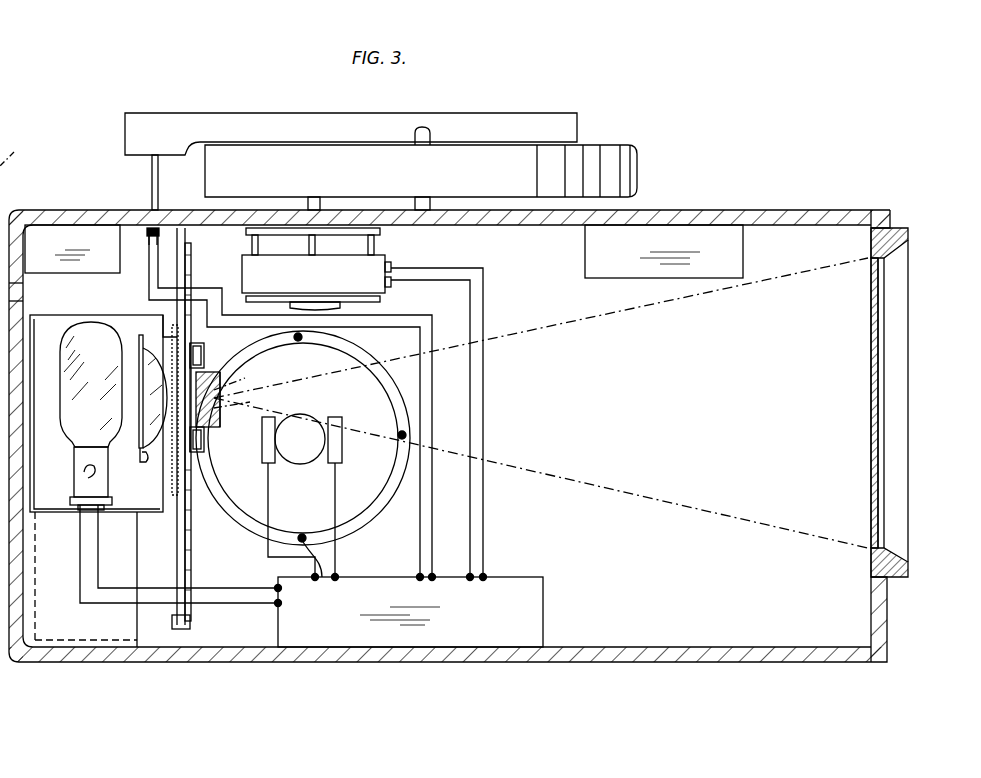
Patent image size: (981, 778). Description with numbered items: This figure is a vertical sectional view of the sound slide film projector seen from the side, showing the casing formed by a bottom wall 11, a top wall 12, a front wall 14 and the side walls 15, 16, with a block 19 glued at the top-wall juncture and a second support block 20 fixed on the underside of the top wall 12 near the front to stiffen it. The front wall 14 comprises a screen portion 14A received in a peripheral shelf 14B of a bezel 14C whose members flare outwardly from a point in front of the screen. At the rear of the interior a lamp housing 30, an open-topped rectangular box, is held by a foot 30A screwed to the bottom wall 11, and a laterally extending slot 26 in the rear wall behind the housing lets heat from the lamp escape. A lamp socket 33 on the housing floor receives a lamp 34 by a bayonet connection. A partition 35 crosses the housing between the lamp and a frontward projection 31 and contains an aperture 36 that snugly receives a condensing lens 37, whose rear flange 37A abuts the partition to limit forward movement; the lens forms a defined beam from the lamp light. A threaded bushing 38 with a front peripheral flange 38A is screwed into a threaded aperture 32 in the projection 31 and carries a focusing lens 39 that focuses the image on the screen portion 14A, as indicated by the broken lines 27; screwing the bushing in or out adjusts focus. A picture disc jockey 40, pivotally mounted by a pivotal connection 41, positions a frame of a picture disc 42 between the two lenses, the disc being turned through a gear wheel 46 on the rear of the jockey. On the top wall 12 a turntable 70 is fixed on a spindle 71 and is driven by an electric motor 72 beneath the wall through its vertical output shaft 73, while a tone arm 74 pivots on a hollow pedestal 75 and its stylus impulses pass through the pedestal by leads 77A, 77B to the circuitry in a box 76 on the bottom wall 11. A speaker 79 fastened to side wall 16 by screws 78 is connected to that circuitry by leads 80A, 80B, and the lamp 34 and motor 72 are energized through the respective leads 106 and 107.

The bottom wall 11 is at (248, 640).
The top wall 12 is at (695, 212).
The front wall 14 is at (896, 308).
The screen portion 14A is at (872, 374).
The peripheral shelf 14B is at (870, 260).
The bezel 14C is at (905, 232).
The side wall 15 is at (24, 150).
The side wall 16 is at (544, 278).
The block 19 is at (80, 240).
The second support block 20 is at (728, 240).
The slot 26 is at (24, 290).
The broken lines 27 is at (627, 312).
The lamp housing 30 is at (52, 494).
The foot 30A is at (62, 630).
The projection 31 is at (205, 358).
The threaded aperture 32 is at (206, 447).
The lamp socket 33 is at (106, 490).
The lamp 34 is at (90, 326).
The partition 35 is at (140, 336).
The aperture 36 is at (140, 452).
The condensing lens 37 is at (152, 388).
The flange 37A is at (124, 352).
The threaded bushing 38 is at (222, 380).
The peripheral flange 38A is at (216, 440).
The focusing lens 39 is at (240, 403).
The picture disc jockey 40 is at (182, 542).
The pivotal connection 41 is at (192, 623).
The picture disc 42 is at (190, 568).
The gear wheel 46 is at (178, 505).
The turntable 70 is at (598, 152).
The spindle 71 is at (426, 128).
The electric motor 72 is at (320, 284).
The output shaft 73 is at (322, 200).
The tone arm 74 is at (290, 113).
The hollow pedestal 75 is at (160, 195).
The box 76 is at (545, 611).
The lead 77A is at (434, 388).
The lead 77B is at (398, 408).
The screws 78 is at (297, 341).
The speaker 79 is at (356, 362).
The lead 80A is at (340, 557).
The lead 80B is at (270, 545).
The leads 106 is at (118, 604).
The leads 107 is at (485, 384).